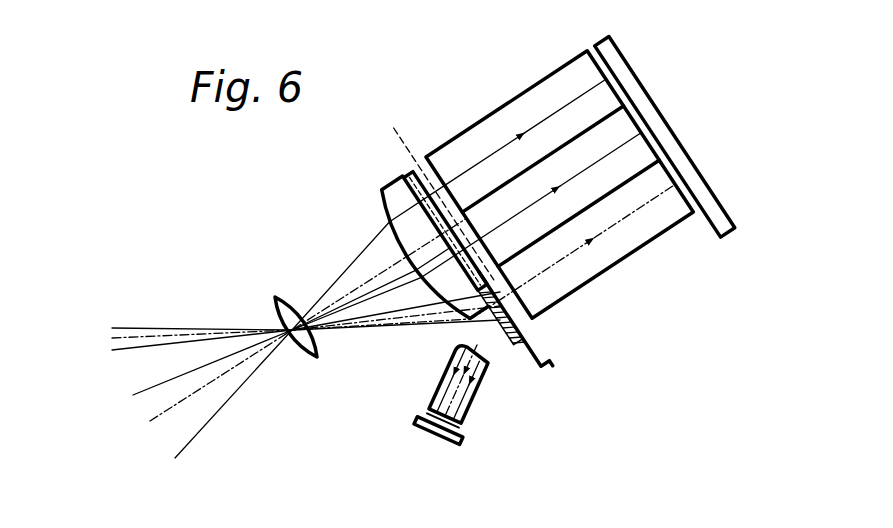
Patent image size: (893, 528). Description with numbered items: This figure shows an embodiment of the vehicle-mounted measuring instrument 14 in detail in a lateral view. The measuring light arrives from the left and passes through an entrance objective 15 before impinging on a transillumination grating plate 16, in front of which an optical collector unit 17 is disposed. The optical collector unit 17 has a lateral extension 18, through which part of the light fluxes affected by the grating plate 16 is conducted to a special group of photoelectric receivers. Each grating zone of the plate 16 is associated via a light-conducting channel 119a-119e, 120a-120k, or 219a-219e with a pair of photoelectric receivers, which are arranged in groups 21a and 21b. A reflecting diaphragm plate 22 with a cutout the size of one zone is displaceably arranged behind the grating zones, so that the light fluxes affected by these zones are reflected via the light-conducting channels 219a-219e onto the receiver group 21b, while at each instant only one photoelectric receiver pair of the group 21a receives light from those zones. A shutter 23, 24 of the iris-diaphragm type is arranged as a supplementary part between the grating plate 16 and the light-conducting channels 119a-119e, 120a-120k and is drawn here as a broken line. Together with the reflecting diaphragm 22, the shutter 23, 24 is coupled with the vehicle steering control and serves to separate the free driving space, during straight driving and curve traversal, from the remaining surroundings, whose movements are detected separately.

The measuring instrument 14 is at (633, 334).
The entrance objective 15 is at (287, 313).
The transillumination grating plate 16 is at (405, 174).
The optical collector unit 17 is at (383, 207).
The lateral extension 18 is at (497, 353).
The group of photoelectric receivers 21a is at (711, 191).
The group of photoelectric receivers 21b is at (437, 434).
The reflecting diaphragm plate 22 is at (543, 352).
The shutter blade 23 is at (420, 162).
The shutter blade 24 is at (439, 193).
The light-conducting channels 119a-119e is at (613, 265).
The light-conducting channels 120a-120k is at (620, 205).
The light-conducting channels 219a-219e is at (441, 383).